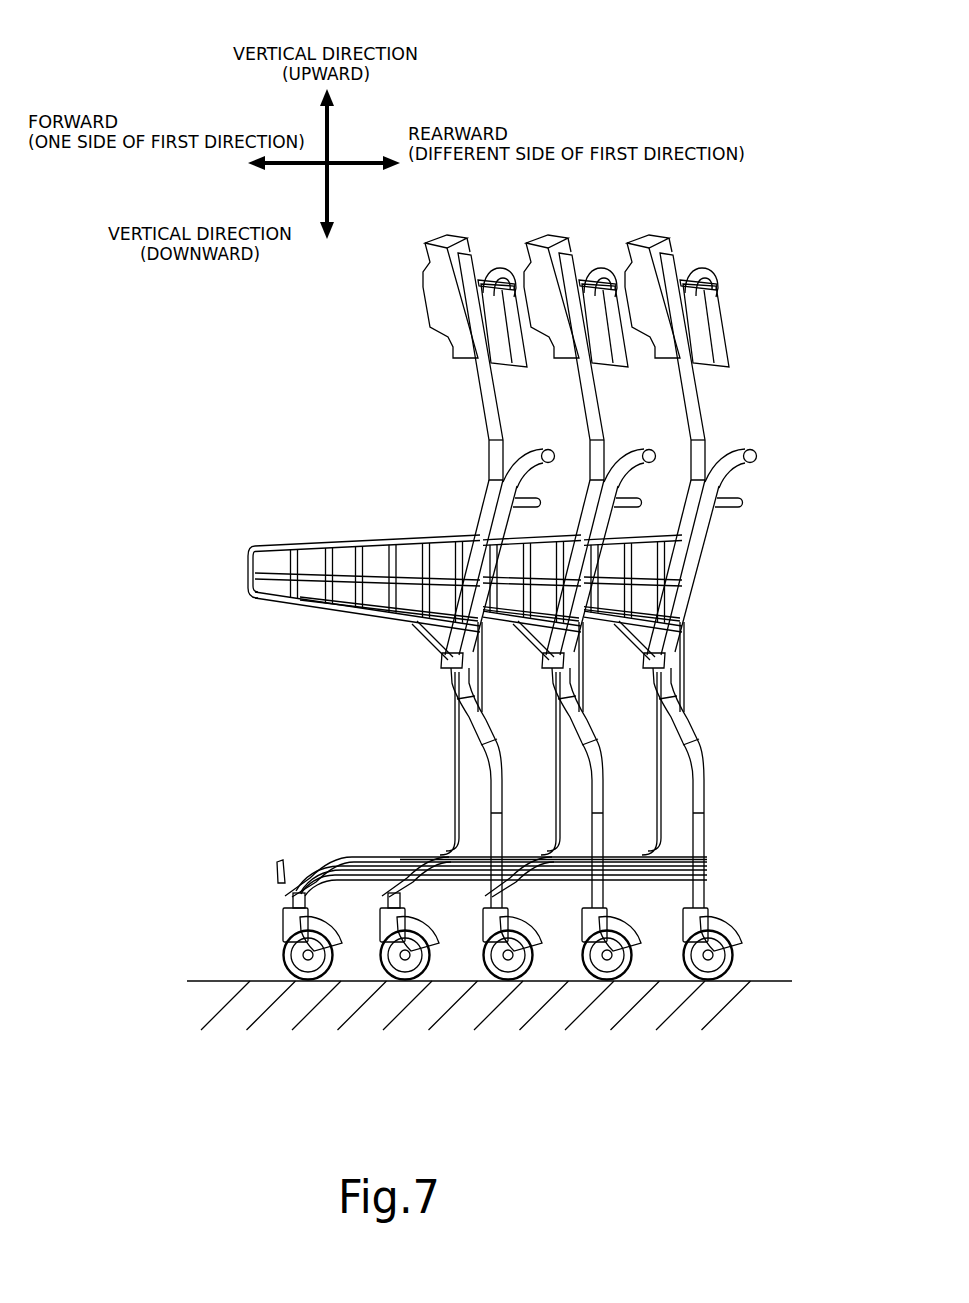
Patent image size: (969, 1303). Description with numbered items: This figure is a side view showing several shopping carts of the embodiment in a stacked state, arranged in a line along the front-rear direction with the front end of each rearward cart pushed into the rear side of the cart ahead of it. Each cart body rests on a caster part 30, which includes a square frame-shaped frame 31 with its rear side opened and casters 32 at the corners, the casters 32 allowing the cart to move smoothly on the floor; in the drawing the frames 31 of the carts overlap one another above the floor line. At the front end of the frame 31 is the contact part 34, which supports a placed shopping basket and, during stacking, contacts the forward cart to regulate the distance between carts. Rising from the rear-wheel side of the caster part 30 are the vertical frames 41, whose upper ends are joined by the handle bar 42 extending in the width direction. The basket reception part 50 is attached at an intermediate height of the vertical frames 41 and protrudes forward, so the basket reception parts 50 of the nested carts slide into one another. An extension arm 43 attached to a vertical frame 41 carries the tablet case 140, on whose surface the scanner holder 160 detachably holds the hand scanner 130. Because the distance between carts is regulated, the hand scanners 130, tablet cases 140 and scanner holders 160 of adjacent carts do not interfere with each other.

The caster part 30 is at (317, 856).
The frame 31 is at (373, 855).
The casters 32 is at (483, 980).
The contact part 34 is at (273, 862).
The vertical frames 41 is at (475, 522).
The handle bar 42 is at (731, 465).
The extension arm 43 is at (488, 426).
The basket reception part 50 is at (290, 545).
The hand scanner 130 is at (506, 360).
The tablet case 140 is at (424, 258).
The scanner holder 160 is at (486, 278).